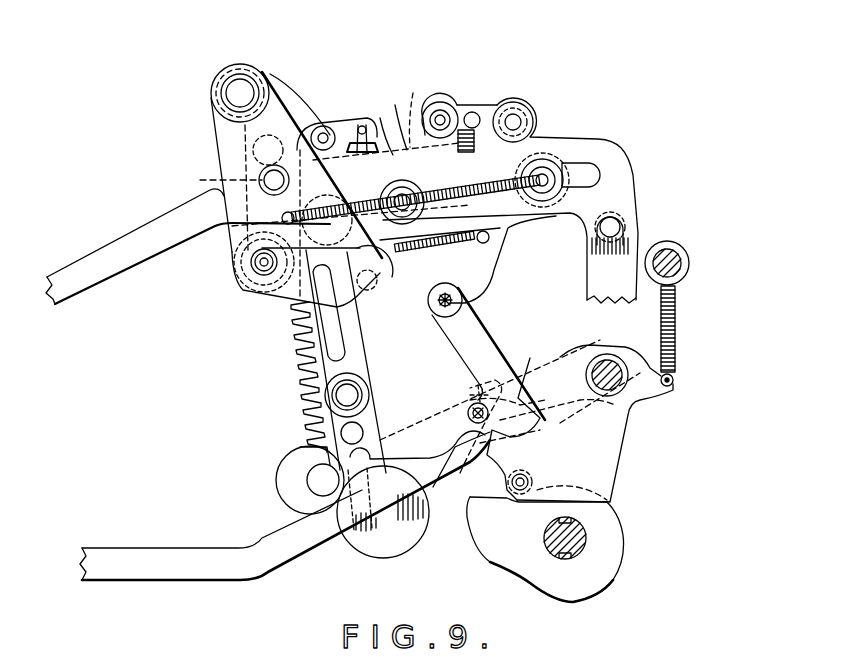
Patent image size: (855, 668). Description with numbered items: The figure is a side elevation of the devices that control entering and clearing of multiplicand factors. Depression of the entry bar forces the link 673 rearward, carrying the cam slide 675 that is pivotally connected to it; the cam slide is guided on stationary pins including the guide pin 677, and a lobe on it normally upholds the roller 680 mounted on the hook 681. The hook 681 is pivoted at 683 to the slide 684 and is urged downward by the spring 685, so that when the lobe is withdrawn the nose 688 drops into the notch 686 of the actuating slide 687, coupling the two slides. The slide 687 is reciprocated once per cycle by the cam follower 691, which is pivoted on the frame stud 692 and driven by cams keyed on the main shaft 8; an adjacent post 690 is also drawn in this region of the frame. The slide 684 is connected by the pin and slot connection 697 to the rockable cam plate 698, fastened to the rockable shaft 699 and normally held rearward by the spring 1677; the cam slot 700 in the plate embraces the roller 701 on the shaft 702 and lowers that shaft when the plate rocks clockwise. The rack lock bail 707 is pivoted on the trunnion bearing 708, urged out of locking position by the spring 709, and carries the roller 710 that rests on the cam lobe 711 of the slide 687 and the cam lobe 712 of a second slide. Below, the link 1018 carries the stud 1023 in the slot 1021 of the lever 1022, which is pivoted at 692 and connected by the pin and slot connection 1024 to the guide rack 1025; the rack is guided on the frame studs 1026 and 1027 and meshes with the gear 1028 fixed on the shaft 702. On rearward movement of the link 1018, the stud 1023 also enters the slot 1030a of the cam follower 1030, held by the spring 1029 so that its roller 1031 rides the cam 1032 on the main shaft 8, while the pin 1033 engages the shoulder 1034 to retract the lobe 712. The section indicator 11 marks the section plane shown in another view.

The rockable shaft 699 is at (247, 86).
The rockable cam plate 698 is at (212, 128).
The pin and slot connection 697 is at (262, 175).
The rack lock bail 707 is at (200, 180).
The link 673 is at (128, 272).
The roller 701 is at (248, 299).
The cam slot 700 is at (368, 293).
The shaft 702 is at (256, 271).
The gear 1028 is at (232, 263).
The rack bar 11 is at (300, 62).
The guide rack 1025 is at (300, 427).
The frame stud 1026 is at (360, 383).
The pin and slot connection 1024 is at (318, 479).
The link 1018 is at (258, 564).
The stud 1023 is at (455, 423).
The lever 1022 is at (455, 400).
The slot 1021 is at (472, 384).
The pin 1033 is at (446, 315).
The shoulder 1034 is at (483, 273).
The frame stud 1027 is at (381, 260).
The notch 686 is at (425, 115).
The cam slide 675 is at (413, 98).
The spring 709 is at (380, 118).
The cam lobe 712 is at (360, 125).
The cam lobe 711 is at (352, 125).
The roller 710 is at (335, 102).
The trunnion bearing 708 is at (287, 78).
The roller 680 is at (450, 108).
The nose 688 is at (466, 130).
The hook 681 is at (480, 115).
The pivot 683 is at (520, 120).
The spring 685 is at (500, 108).
The slide 684 is at (605, 160).
The guide pin 677 is at (548, 175).
The spring 1677 is at (545, 177).
The actuating slide 687 is at (628, 207).
The post 690 is at (596, 246).
The cam follower 691 is at (638, 247).
The spring 1029 is at (676, 333).
The frame stud 692 is at (605, 354).
The cam follower 1030 is at (622, 453).
The slot 1030a is at (505, 360).
The roller 1031 is at (507, 484).
The cam 1032 is at (493, 563).
The main shaft 8 is at (587, 537).